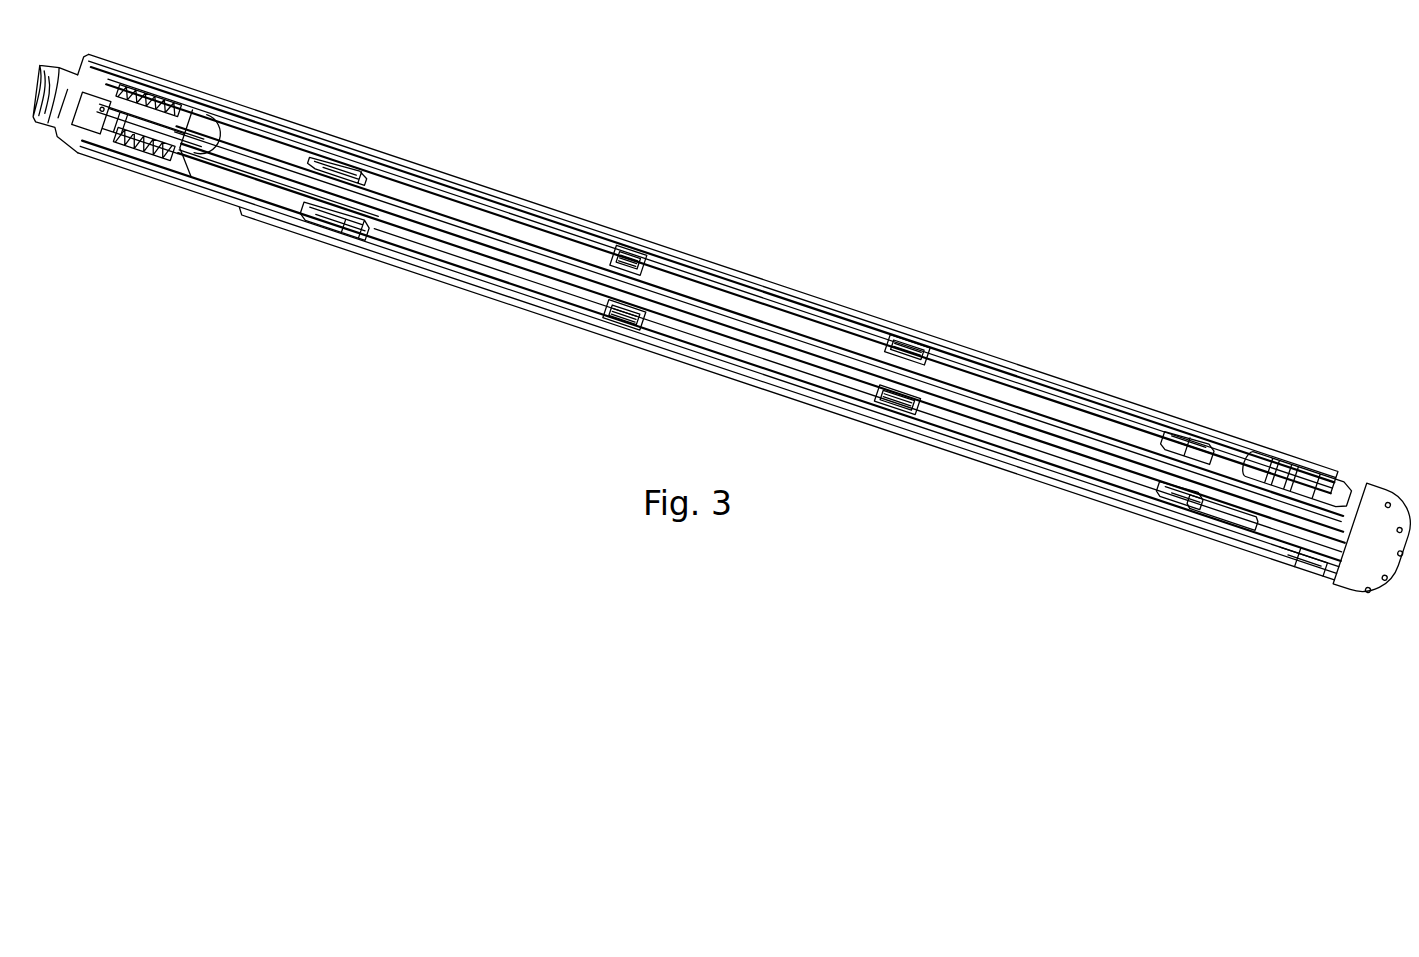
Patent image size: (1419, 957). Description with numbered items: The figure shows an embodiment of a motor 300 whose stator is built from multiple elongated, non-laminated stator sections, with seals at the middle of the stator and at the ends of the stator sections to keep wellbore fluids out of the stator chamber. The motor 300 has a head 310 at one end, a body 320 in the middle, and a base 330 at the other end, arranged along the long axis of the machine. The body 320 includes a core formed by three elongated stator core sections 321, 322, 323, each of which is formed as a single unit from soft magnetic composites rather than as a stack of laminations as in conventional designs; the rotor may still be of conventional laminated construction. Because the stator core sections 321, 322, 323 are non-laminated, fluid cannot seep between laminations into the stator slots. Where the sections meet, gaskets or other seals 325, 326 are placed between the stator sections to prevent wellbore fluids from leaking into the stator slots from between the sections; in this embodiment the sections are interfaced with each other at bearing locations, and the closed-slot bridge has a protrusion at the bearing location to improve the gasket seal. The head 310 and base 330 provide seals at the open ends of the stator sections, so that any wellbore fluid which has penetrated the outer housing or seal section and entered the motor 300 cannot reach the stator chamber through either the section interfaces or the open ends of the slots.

The motor 300 is at (716, 301).
The head 310 is at (1325, 438).
The body 320 is at (727, 290).
The stator core section 321 is at (1062, 380).
The stator core section 322 is at (786, 291).
The stator core section 323 is at (459, 178).
The seal 325 is at (928, 333).
The seal 326 is at (648, 247).
The base 330 is at (196, 72).